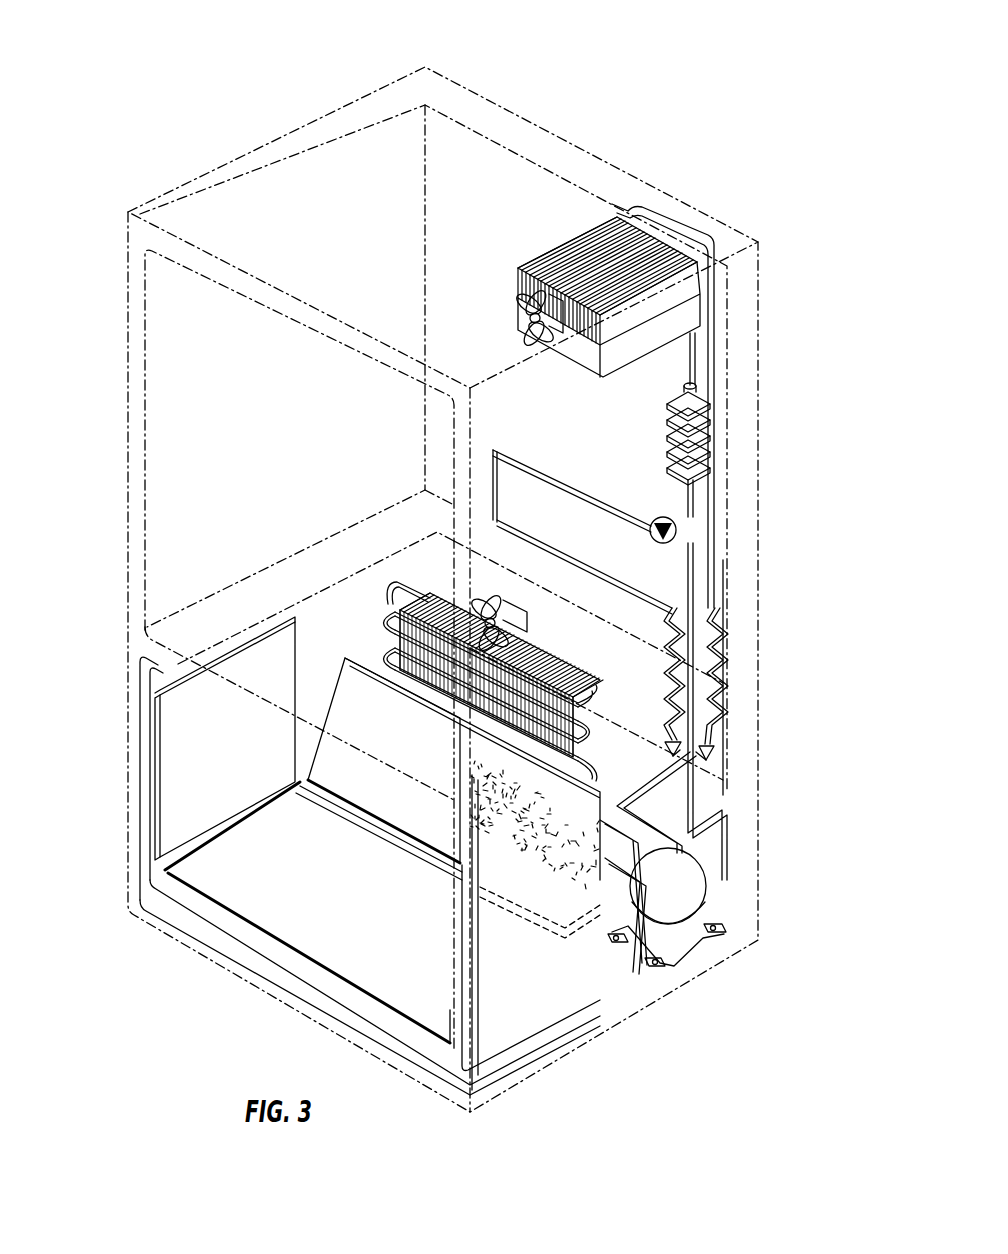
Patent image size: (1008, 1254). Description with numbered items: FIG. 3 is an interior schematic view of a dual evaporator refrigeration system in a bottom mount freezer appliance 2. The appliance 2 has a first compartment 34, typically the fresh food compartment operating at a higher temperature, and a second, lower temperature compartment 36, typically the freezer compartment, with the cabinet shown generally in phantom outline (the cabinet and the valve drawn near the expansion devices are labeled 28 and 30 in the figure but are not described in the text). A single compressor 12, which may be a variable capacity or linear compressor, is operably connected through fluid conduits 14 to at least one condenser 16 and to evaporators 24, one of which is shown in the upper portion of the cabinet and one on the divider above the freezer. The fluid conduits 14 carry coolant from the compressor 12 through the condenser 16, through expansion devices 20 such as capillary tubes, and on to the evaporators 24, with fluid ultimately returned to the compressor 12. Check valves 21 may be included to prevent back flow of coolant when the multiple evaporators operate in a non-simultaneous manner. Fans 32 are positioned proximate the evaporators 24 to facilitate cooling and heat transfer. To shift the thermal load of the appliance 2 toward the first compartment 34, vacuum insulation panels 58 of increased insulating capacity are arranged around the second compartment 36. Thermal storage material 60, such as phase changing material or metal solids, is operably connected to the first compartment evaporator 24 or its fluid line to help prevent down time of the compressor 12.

The appliance 2 is at (238, 82).
The compressor 12 is at (698, 915).
The fluid conduits 14 is at (495, 449).
The condenser 16 is at (545, 870).
The expansion device 20 is at (700, 620).
The check valve 21 is at (672, 523).
The evaporator 24 is at (594, 220).
The cabinet 28 is at (498, 100).
The valve 30 is at (702, 712).
The fan 32 is at (512, 305).
The first compartment 34 is at (232, 491).
The second compartment 36 is at (268, 853).
The vacuum insulation panels 58 is at (208, 786).
The thermal storage material 60 is at (710, 443).